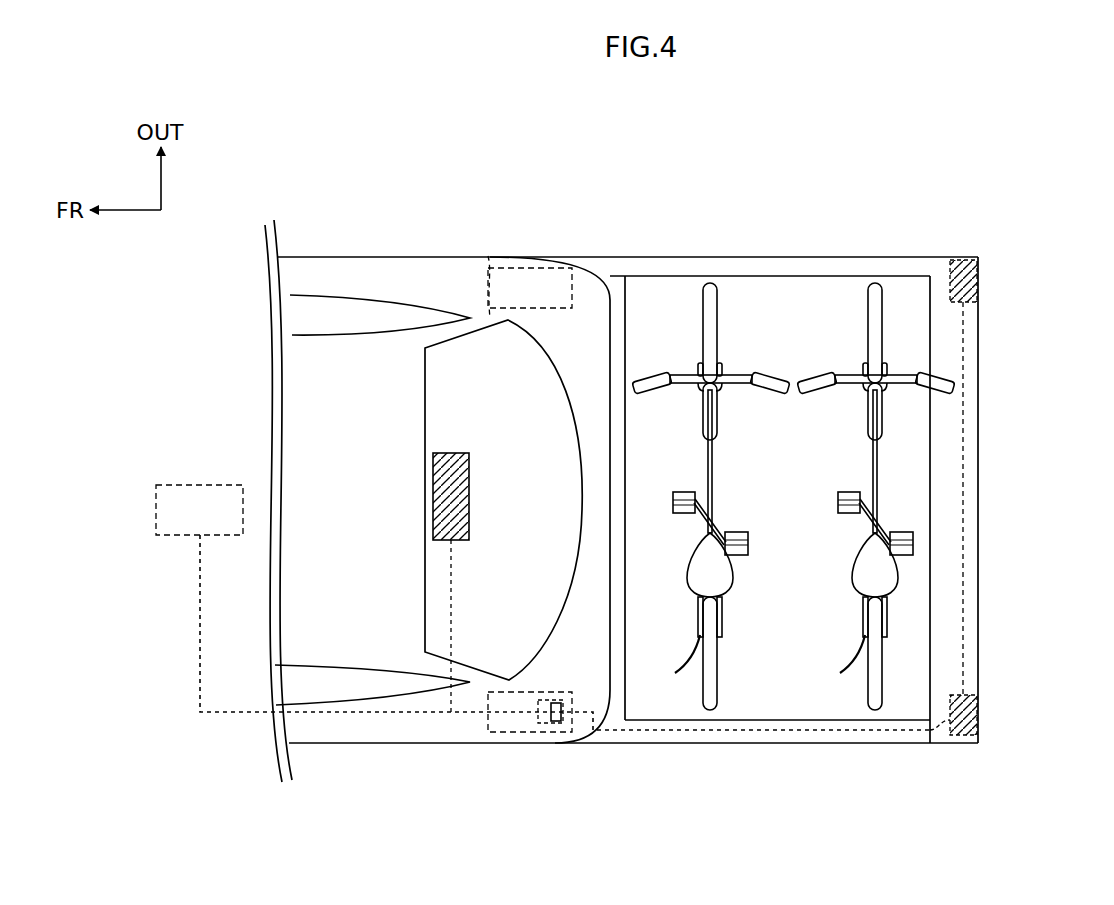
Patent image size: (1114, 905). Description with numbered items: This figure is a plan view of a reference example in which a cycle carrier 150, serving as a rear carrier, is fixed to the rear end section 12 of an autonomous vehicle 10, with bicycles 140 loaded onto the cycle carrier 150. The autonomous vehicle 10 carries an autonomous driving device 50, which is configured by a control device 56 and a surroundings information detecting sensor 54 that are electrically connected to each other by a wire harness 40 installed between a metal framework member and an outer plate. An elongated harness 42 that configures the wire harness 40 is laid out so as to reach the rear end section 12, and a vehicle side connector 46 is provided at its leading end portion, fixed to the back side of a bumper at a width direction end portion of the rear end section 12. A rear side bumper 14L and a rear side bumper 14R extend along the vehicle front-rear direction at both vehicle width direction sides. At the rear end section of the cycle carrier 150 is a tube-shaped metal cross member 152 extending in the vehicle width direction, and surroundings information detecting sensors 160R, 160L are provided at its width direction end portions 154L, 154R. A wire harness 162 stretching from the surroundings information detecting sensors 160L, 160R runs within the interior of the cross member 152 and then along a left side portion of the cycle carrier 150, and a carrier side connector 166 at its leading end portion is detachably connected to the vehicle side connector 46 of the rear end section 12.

The autonomous vehicle 10 is at (410, 212).
The rear end section 12 is at (597, 682).
The rear side bumper 14R is at (553, 256).
The rear side bumper 14L is at (520, 733).
The wire harness 40 is at (355, 712).
The elongated harness 42 is at (470, 717).
The vehicle side connector 46 is at (547, 724).
The autonomous driving device 50 is at (425, 778).
The surroundings information detecting sensor 54 is at (470, 497).
The control device 56 is at (162, 536).
The bicycles 140 is at (713, 462).
The cycle carrier 150 is at (778, 252).
The cross member 152 is at (978, 497).
The width direction end portion 154R is at (957, 256).
The width direction end portion 154L is at (967, 743).
The surroundings information detecting sensor 160R is at (978, 282).
The surroundings information detecting sensor 160L is at (978, 715).
The wire harness 162 is at (817, 731).
The carrier side connector 166 is at (555, 723).